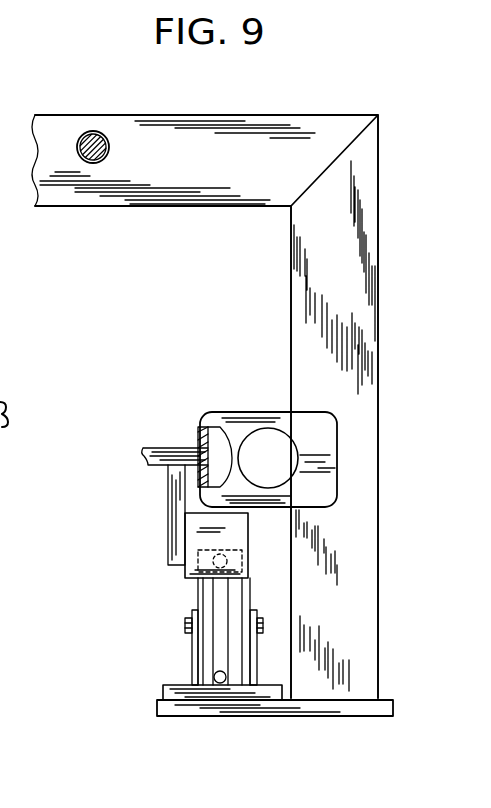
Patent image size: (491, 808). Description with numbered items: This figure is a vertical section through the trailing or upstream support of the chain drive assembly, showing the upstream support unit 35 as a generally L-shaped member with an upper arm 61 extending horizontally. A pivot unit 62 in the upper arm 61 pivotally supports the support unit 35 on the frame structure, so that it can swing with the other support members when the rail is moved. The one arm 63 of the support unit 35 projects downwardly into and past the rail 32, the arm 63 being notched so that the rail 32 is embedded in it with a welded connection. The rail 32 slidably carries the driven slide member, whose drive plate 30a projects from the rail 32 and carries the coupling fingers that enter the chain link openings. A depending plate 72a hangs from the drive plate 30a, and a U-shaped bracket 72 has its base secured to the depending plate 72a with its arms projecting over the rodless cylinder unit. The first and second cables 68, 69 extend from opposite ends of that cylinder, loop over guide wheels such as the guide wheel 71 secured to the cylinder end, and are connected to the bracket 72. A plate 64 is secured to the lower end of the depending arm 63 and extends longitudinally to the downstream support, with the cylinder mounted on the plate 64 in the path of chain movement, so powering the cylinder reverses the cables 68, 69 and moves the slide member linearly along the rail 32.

The upstream support unit 35 is at (285, 108).
The upper arm 61 is at (192, 179).
The pivot unit 62 is at (115, 135).
The arm 63 is at (352, 294).
The rail 32 is at (268, 410).
The drive plate 30a is at (159, 442).
The depending plate 72a is at (165, 497).
The bracket 72 is at (192, 537).
The second cable 69 is at (224, 556).
The guide wheel 71 is at (181, 609).
The first cable 68 is at (214, 672).
The plate 64 is at (179, 718).